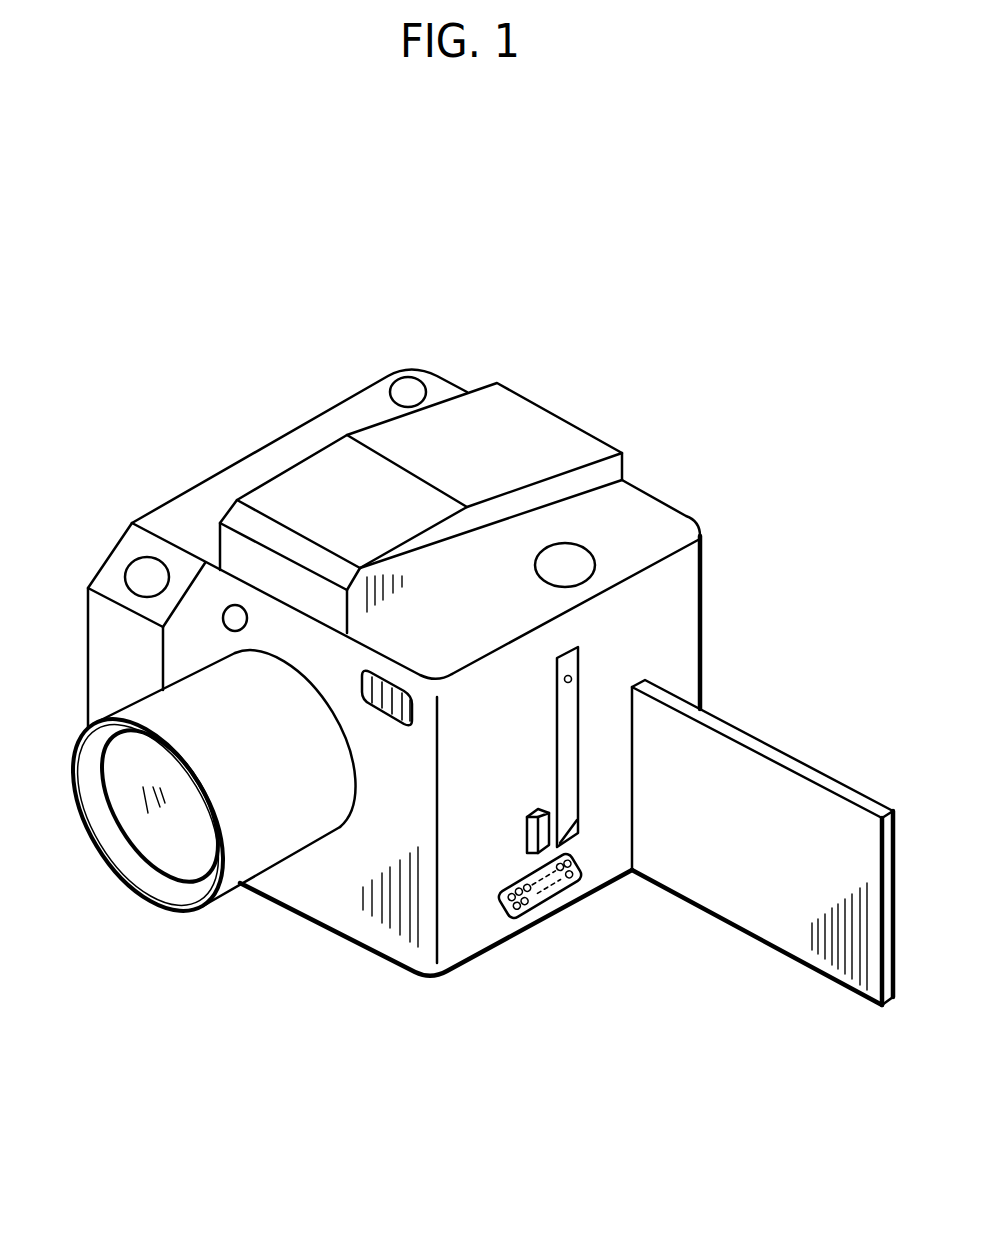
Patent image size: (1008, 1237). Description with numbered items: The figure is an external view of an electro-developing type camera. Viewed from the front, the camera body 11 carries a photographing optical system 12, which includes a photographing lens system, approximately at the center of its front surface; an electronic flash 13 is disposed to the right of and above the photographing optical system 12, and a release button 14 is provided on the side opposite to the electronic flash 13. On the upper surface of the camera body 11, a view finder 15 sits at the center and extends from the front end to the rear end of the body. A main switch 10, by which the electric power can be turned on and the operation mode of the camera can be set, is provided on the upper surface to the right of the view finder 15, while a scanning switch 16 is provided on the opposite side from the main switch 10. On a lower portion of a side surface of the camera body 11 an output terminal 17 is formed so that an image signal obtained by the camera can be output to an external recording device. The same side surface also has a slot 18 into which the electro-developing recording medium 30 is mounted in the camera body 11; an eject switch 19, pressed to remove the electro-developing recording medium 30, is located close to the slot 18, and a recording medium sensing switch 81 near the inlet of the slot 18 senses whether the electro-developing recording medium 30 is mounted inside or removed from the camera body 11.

The main switch 10 is at (408, 392).
The camera body 11 is at (347, 943).
The photographing optical system 12 is at (167, 847).
The electronic flash 13 is at (388, 725).
The release button 14 is at (147, 577).
The view finder 15 is at (315, 487).
The scanning switch 16 is at (565, 563).
The output terminal 17 is at (527, 905).
The slot 18 is at (570, 797).
The eject switch 19 is at (527, 833).
The electro-developing recording medium 30 is at (760, 913).
The recording medium sensing switch 81 is at (577, 680).